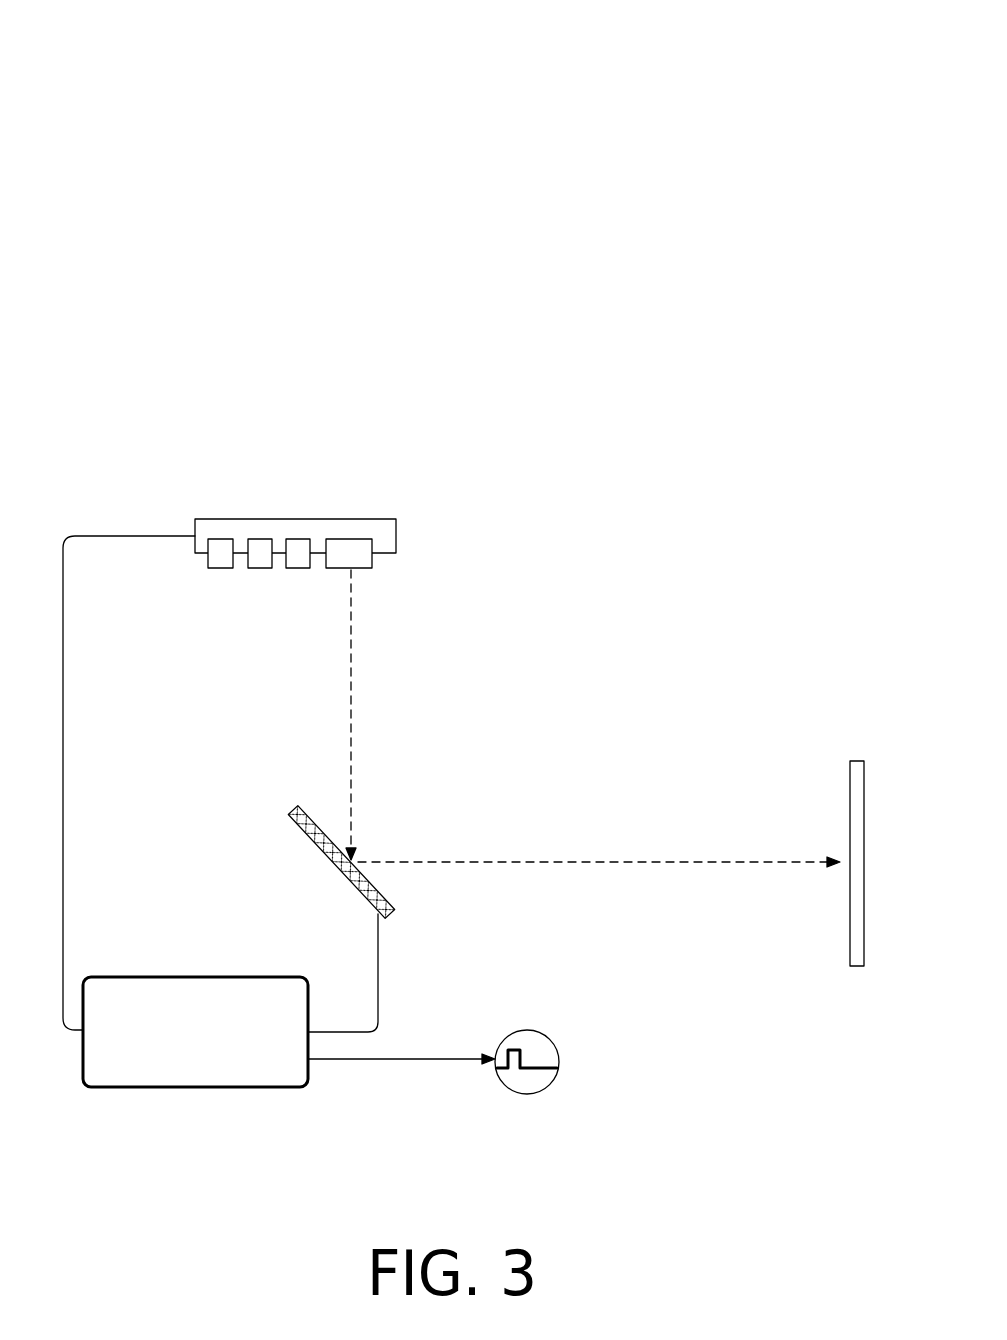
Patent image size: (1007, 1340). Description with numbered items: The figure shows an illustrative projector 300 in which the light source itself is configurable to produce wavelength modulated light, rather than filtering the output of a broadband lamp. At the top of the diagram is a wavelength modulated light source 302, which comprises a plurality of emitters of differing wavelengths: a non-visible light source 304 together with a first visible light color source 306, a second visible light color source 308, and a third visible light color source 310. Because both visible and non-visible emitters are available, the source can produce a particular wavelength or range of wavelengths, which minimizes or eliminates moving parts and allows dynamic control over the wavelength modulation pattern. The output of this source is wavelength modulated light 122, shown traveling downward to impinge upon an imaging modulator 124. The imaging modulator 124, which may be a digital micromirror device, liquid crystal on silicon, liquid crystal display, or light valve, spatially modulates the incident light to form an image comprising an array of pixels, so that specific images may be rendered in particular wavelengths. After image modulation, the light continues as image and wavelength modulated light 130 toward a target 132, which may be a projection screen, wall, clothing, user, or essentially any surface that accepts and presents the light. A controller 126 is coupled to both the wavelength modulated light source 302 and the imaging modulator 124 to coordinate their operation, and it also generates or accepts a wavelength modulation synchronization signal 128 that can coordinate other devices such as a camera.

The projector 300 is at (754, 38).
The wavelength modulated light source 302 is at (397, 531).
The non-visible light source 304 is at (366, 561).
The first visible light color source 306 is at (300, 538).
The second visible light color source 308 is at (260, 538).
The third visible light color source 310 is at (220, 538).
The wavelength modulated light 122 is at (435, 715).
The imaging modulator 124 is at (335, 862).
The controller 126 is at (178, 1056).
The wavelength modulation synchronization signal 128 is at (460, 1127).
The image and wavelength modulated light 130 is at (599, 898).
The target 132 is at (857, 787).